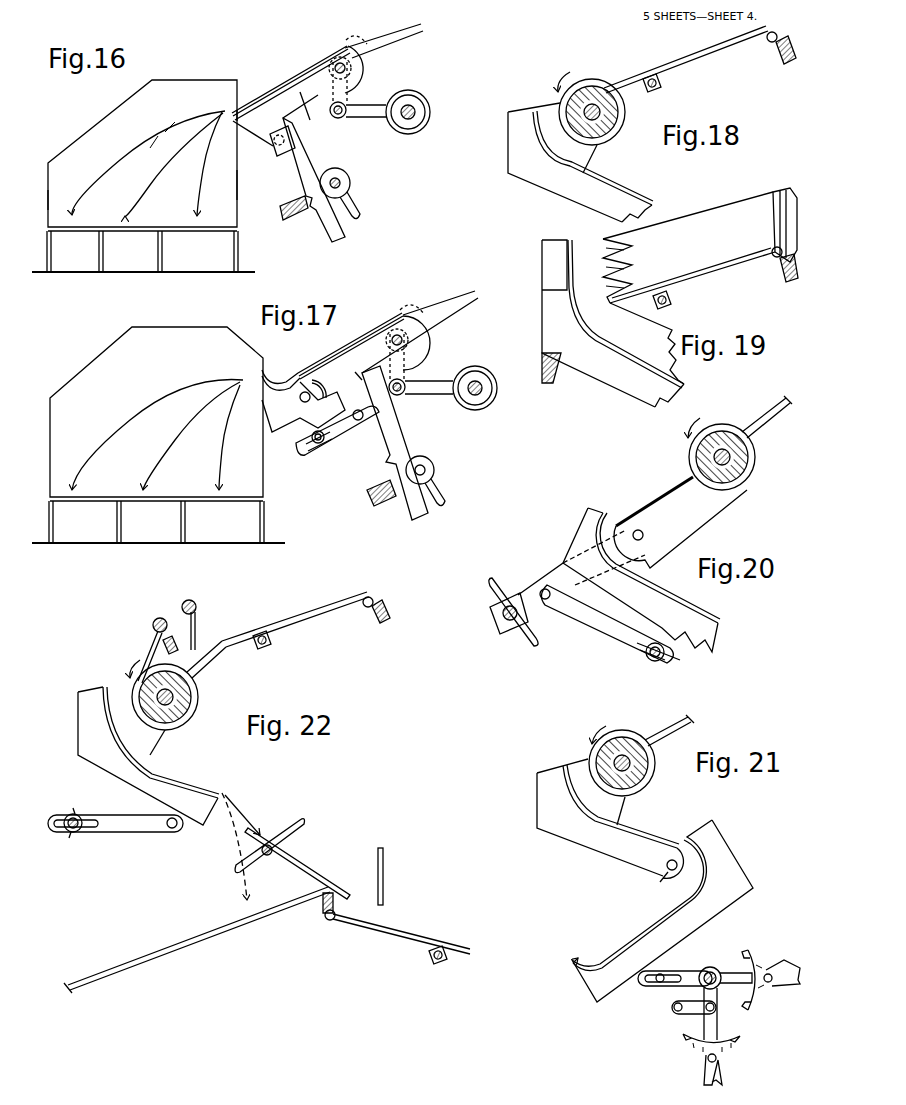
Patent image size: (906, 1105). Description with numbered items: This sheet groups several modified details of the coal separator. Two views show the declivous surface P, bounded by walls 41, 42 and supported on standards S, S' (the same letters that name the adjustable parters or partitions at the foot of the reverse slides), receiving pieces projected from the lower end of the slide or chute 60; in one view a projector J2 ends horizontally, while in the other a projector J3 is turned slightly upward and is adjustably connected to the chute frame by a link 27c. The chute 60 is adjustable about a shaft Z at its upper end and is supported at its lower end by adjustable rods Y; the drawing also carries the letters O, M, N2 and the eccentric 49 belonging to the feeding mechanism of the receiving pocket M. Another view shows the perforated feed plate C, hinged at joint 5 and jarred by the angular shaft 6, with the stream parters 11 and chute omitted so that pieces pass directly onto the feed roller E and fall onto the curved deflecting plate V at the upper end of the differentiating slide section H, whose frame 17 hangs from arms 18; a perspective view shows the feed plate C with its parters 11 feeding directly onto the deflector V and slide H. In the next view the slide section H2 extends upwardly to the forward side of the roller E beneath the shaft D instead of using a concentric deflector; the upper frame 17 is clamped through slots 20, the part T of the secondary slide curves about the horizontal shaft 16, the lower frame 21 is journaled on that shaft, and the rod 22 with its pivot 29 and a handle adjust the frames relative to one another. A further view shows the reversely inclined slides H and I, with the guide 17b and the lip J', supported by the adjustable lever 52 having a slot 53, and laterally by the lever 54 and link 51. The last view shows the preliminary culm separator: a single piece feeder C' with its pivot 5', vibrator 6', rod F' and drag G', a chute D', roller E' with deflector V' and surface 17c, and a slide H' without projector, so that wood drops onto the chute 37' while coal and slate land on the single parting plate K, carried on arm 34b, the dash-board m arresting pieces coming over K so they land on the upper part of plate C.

In FIG. 16, the declivous surface P is at (142, 155).
In FIG. 17, the declivous surface P is at (156, 414).
In FIG. 16, the hopper wall 41 is at (245, 185).
In FIG. 16, the hopper wall 42 is at (39, 200).
In FIG. 16, the parter or partition S is at (143, 265).
In FIG. 17, the parter or partition S is at (158, 535).
In FIG. 16, the parter or partition S' is at (78, 265).
In FIG. 17, the parter or partition S' is at (88, 535).
In FIG. 16, the projector J2 is at (253, 113).
In FIG. 17, the projector J3 is at (281, 383).
In FIG. 16, the chute O is at (291, 83).
In FIG. 17, the chute O is at (351, 346).
In FIG. 16, the receiving pocket M is at (378, 64).
In FIG. 17, the receiving pocket M is at (420, 335).
In FIG. 16, the shaft Z is at (334, 73).
In FIG. 16, the cam arc N2 is at (367, 69).
In FIG. 17, the cam arc N2 is at (416, 343).
In FIG. 16, the slide or chute 60 is at (343, 114).
In FIG. 17, the slide or chute 60 is at (398, 376).
In FIG. 16, the eccentric 49 is at (417, 112).
In FIG. 17, the eccentric 49 is at (484, 388).
In FIG. 16, the adjustable rod Y is at (315, 168).
In FIG. 17, the adjustable rod Y is at (353, 443).
In FIG. 17, the link 27c is at (337, 432).
In FIG. 18, the feed plate C is at (686, 59).
In FIG. 19, the feed plate C is at (689, 247).
In FIG. 22, the feed plate C is at (401, 927).
In FIG. 18, the feed roller E is at (599, 108).
In FIG. 20, the feed roller E is at (729, 454).
In FIG. 21, the feed roller E is at (630, 761).
In FIG. 18, the curved receiving and deflecting plate V is at (580, 162).
In FIG. 19, the curved receiving and deflecting plate V is at (612, 323).
In FIG. 20, the curved receiving and deflecting plate V is at (673, 477).
In FIG. 21, the curved receiving and deflecting plate V is at (607, 817).
In FIG. 18, the differentiating slide section H is at (619, 178).
In FIG. 19, the differentiating slide section H is at (647, 355).
In FIG. 21, the differentiating slide section H is at (647, 825).
In FIG. 18, the arm 18 is at (595, 156).
In FIG. 20, the arm 18 is at (759, 480).
In FIG. 21, the arm 18 is at (629, 811).
In FIG. 22, the arm 18 is at (161, 742).
In FIG. 18, the slide-supporting frame 17 is at (605, 200).
In FIG. 19, the slide-supporting frame 17 is at (628, 312).
In FIG. 20, the slide-supporting frame 17 is at (680, 529).
In FIG. 18, the angular shaft 6 is at (658, 84).
In FIG. 19, the angular shaft 6 is at (669, 300).
In FIG. 22, the angular shaft 6 is at (431, 959).
In FIG. 18, the hinge joint 5 is at (777, 48).
In FIG. 19, the hinge joint 5 is at (781, 235).
In FIG. 22, the hinge joint 5 is at (329, 915).
In FIG. 19, the parter or stream breaker 11 is at (596, 271).
In FIG. 20, the feed chute or slide D is at (767, 417).
In FIG. 21, the feed chute or slide D is at (669, 734).
In FIG. 20, the slide section H2 is at (654, 501).
In FIG. 20, the curved upper part of secondary slide T is at (619, 574).
In FIG. 21, the curved upper part of secondary slide T is at (662, 911).
In FIG. 20, the horizontal shaft 16 is at (650, 542).
In FIG. 21, the horizontal shaft 16 is at (664, 869).
In FIG. 20, the slide frame 21 is at (644, 616).
In FIG. 21, the slide frame 21 is at (684, 921).
In FIG. 20, the rod 22 is at (606, 624).
In FIG. 22, the rod 22 is at (115, 829).
In FIG. 20, the slot 20 is at (523, 618).
In FIG. 20, the pivot 29 is at (654, 662).
In FIG. 21, the guide surface 17b is at (623, 805).
In FIG. 21, the secondary slide section I is at (642, 895).
In FIG. 21, the lip J' is at (581, 948).
In FIG. 21, the adjustable lever 52 is at (749, 980).
In FIG. 21, the slot 53 is at (670, 988).
In FIG. 21, the link 51 is at (694, 1015).
In FIG. 21, the adjustable lever 54 is at (711, 1036).
In FIG. 22, the single piece feeder C' is at (295, 617).
In FIG. 22, the feed chute D' is at (208, 661).
In FIG. 22, the roller E' is at (175, 695).
In FIG. 22, the rod F' is at (198, 625).
In FIG. 22, the rod G' is at (151, 650).
In FIG. 22, the guide frame V' is at (148, 756).
In FIG. 22, the slide H' is at (220, 824).
In FIG. 22, the guide surface 17c is at (163, 740).
In FIG. 22, the pivot pin 5' is at (372, 610).
In FIG. 22, the block 6' is at (270, 642).
In FIG. 22, the arm 34b is at (271, 842).
In FIG. 22, the parting plate K is at (297, 863).
In FIG. 22, the dash-board m is at (389, 876).
In FIG. 22, the chute 37' is at (197, 940).